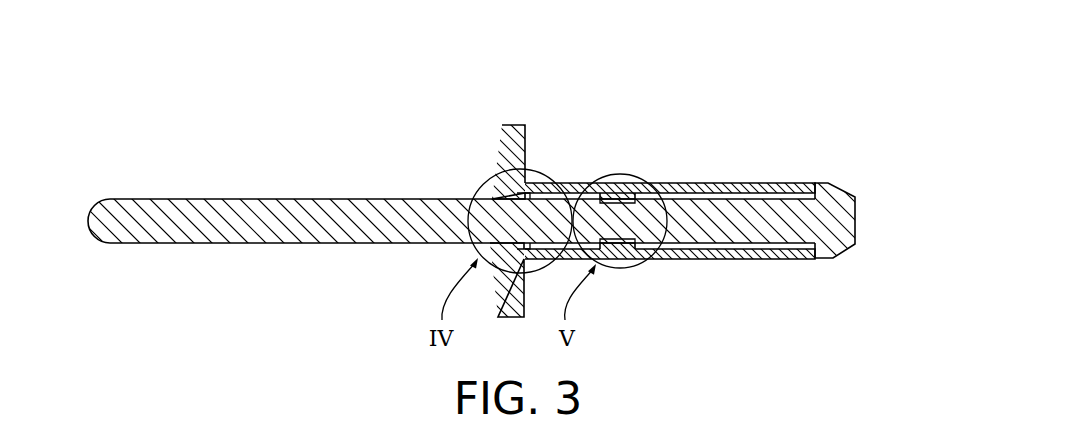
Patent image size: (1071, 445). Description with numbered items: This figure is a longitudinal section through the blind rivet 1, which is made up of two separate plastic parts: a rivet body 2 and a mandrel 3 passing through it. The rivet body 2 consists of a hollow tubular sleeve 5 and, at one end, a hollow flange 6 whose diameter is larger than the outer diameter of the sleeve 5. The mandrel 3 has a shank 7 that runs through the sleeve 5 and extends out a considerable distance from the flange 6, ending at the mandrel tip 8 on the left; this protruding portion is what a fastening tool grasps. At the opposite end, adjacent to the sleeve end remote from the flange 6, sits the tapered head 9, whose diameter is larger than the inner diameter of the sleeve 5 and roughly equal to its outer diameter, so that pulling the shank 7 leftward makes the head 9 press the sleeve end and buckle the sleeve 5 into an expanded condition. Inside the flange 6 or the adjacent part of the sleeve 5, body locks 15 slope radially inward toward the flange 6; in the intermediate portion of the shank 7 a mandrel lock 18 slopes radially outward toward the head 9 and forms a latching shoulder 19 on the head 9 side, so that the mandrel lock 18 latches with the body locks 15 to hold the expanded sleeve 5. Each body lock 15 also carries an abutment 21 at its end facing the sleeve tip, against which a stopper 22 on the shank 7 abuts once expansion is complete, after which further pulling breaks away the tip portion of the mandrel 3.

The blind rivet 1 is at (455, 57).
The rivet body 2 is at (566, 120).
The mandrel 3 is at (441, 120).
The sleeve 5 is at (697, 258).
The flange 6 is at (493, 172).
The shank 7 is at (292, 232).
The mandrel tip 8 is at (88, 228).
The head 9 is at (834, 192).
The body locks 15 is at (510, 199).
The mandrel lock 18 is at (600, 198).
The latching shoulder 19 is at (622, 256).
The abutment 21 is at (527, 183).
The stopper 22 is at (633, 192).